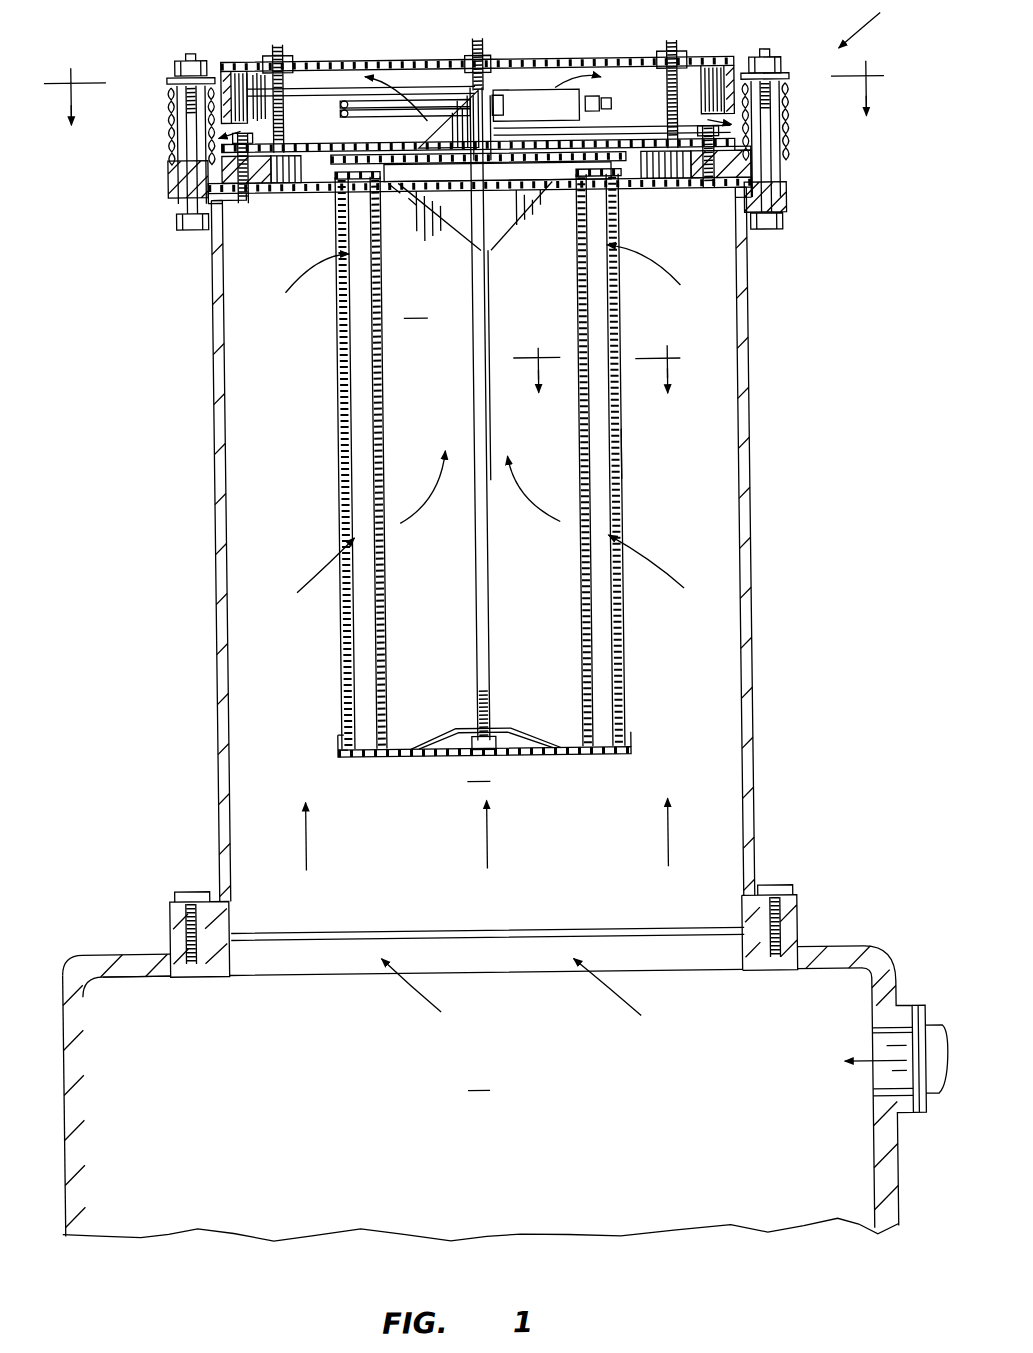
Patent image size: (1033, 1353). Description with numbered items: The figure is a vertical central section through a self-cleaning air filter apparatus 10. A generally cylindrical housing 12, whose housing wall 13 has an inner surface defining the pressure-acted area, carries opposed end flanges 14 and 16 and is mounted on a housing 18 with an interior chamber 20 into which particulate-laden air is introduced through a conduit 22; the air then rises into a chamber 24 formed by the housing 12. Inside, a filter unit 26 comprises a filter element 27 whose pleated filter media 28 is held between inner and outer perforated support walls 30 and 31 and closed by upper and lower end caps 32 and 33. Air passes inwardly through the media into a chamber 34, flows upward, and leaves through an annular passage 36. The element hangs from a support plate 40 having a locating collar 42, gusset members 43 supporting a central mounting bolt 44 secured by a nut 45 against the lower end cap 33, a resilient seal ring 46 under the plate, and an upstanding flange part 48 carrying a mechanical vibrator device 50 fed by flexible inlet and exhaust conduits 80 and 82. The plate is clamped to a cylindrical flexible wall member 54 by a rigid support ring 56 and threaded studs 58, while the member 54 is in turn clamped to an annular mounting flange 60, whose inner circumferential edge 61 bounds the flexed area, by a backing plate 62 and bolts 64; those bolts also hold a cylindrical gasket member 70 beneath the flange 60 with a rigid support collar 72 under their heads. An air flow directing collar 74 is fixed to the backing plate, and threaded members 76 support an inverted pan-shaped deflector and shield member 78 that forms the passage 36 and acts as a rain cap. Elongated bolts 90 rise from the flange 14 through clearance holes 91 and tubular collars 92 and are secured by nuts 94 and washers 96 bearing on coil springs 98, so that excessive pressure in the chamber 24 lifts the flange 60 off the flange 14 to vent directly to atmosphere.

The filter apparatus 10 is at (478, 204).
The housing 12 is at (751, 457).
The housing wall 13 is at (226, 460).
The end flange 14 is at (794, 194).
The end flange 16 is at (799, 912).
The housing 18 is at (890, 1184).
The interior chamber 20 is at (297, 1033).
The conduit 22 is at (922, 1016).
The chamber 24 is at (485, 758).
The filter unit 26 is at (338, 381).
The filter element 27 is at (623, 307).
The filter media 28 is at (487, 632).
The inner cylindrical perforated metal support wall 30 is at (581, 458).
The outer cylindrical perforated metal support wall 31 is at (624, 455).
The upper end cap 32 is at (340, 180).
The lower end cap 33 is at (354, 752).
The chamber 34 is at (402, 462).
The annular passage 36 is at (697, 72).
The support plate 40 is at (572, 252).
The filter element locating collar 42 is at (384, 252).
The gusset members 43 is at (464, 233).
The mounting bolt 44 is at (476, 650).
The nut 45 is at (498, 746).
The resilient seal ring 46 is at (362, 180).
The flange part 48 is at (470, 104).
The mechanical vibrator device 50 is at (518, 90).
The cylindrical flexible wall member 54 is at (626, 180).
The support ring 56 is at (573, 130).
The threaded bolts or studs 58 is at (357, 128).
The annular mounting flange 60 is at (781, 166).
The inner circumferential edge 61 is at (682, 166).
The backing plate 62 is at (319, 190).
The bolts 64 is at (722, 190).
The cylindrical gasket member 70 is at (171, 184).
The support collar 72 is at (216, 198).
The air flow directing collar 74 is at (272, 98).
The threaded members 76 is at (284, 70).
The air flow deflector and shield member 78 is at (248, 66).
The inlet conduit 80 is at (368, 84).
The exhaust conduit 82 is at (386, 120).
The elongated bolts 90 is at (181, 220).
The clearance holes 91 is at (183, 162).
The tubular collars 92 is at (173, 104).
The nut 94 is at (185, 58).
The washer 96 is at (172, 76).
The coil spring 98 is at (175, 119).